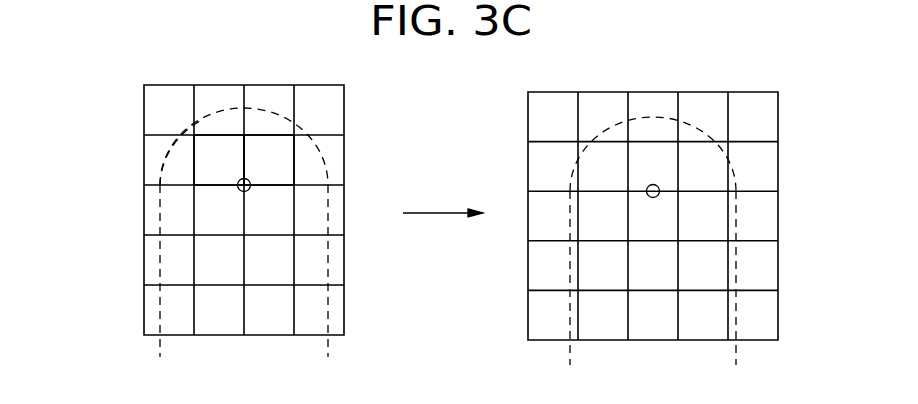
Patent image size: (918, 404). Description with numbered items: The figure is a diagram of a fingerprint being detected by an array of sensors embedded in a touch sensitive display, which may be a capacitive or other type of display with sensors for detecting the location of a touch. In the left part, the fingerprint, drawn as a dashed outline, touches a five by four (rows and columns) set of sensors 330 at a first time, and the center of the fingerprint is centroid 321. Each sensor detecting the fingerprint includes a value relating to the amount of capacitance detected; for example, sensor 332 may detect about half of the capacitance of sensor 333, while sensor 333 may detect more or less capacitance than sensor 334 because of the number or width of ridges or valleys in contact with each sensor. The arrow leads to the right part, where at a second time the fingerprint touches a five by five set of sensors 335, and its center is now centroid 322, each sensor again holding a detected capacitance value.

The centroid 321 is at (245, 192).
The centroid 322 is at (652, 198).
The set of sensors 330 is at (345, 117).
The sensor 332 is at (162, 155).
The sensor 333 is at (215, 155).
The sensor 334 is at (266, 152).
The set of sensors 335 is at (779, 118).